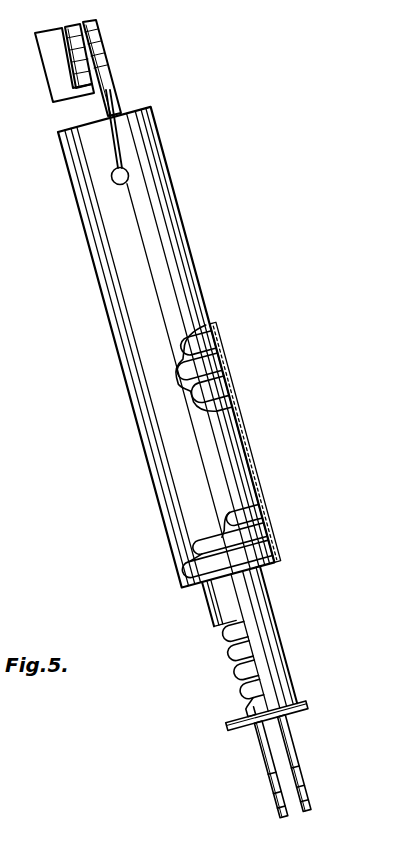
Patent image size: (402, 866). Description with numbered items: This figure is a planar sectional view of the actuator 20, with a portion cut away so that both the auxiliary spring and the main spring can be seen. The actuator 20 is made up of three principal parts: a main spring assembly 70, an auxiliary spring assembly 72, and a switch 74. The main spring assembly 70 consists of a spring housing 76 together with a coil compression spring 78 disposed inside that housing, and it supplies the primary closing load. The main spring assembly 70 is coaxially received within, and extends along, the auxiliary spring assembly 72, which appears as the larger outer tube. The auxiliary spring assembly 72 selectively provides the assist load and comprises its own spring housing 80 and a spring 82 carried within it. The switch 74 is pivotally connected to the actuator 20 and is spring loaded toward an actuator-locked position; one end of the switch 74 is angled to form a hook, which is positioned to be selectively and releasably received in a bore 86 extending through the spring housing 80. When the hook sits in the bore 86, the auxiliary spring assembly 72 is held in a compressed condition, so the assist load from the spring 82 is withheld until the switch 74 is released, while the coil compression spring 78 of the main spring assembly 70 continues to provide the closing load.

The actuator 20 is at (196, 263).
The auxiliary spring assembly 72 is at (100, 296).
The switch 74 is at (113, 133).
The bore 86 is at (128, 176).
The spring 82 is at (216, 365).
The spring housing 80 is at (233, 431).
The main spring assembly 70 is at (276, 613).
The spring housing 76 is at (283, 676).
The coil compression spring 78 is at (236, 686).